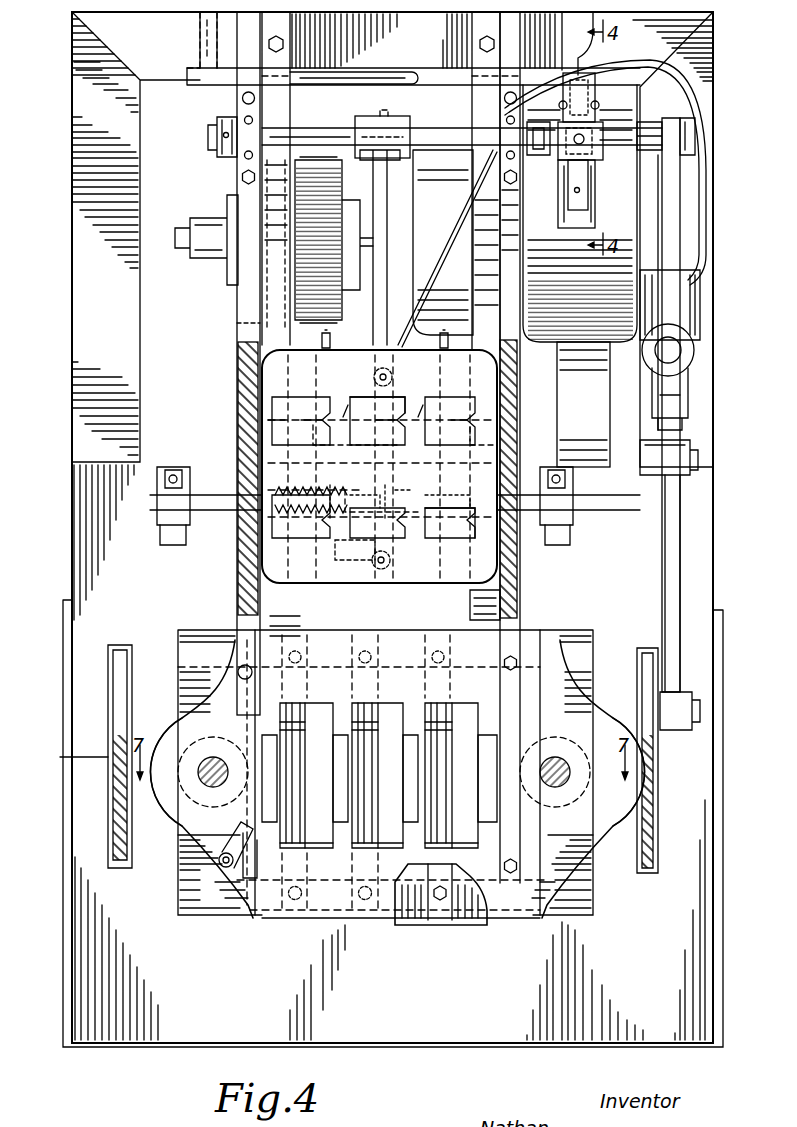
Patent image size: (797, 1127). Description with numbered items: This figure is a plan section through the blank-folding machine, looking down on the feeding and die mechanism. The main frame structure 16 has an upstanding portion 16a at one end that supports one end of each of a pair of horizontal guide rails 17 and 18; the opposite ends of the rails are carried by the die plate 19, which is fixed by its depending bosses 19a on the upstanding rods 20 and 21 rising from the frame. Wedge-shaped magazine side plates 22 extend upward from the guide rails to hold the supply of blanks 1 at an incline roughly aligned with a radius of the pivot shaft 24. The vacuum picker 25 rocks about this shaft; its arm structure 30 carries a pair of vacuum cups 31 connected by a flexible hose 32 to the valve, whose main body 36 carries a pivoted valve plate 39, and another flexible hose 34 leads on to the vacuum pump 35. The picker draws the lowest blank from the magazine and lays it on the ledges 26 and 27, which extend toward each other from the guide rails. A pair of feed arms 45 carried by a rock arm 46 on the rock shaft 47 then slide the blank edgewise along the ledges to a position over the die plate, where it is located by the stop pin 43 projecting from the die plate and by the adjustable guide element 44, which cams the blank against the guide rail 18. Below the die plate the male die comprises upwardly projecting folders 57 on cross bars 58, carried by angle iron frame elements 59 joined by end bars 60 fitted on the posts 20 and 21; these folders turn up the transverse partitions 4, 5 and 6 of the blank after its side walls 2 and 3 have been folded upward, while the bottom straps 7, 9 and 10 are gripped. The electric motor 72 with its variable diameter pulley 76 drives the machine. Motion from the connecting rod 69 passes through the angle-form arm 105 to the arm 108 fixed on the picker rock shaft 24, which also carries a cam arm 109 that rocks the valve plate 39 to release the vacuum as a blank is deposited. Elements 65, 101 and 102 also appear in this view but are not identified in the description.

The blank 1 is at (395, 598).
The side wall 2 is at (386, 386).
The side wall 3 is at (450, 546).
The transverse partition 4 is at (311, 486).
The transverse partition 5 is at (365, 484).
The transverse partition 6 is at (447, 484).
The bottom strap 7 is at (273, 445).
The bottom strap 9 is at (338, 490).
The bottom strap 10 is at (490, 452).
The main frame structure 16 is at (348, 72).
The upstanding portion 16a is at (418, 70).
The guide rail 17 is at (238, 335).
The guide rail 18 is at (545, 310).
The die plate 19 is at (560, 688).
The depending boss 19a is at (387, 779).
The upstanding rod 20 is at (208, 738).
The upstanding rod 21 is at (570, 725).
The magazine side plate 22 is at (540, 385).
The pivot shaft 24 is at (437, 120).
The vacuum picker 25 is at (335, 550).
The ledge 26 is at (280, 622).
The ledge 27 is at (485, 600).
The arm structure 30 is at (372, 190).
The vacuum cup 31 is at (372, 562).
The flexible hose 32 is at (455, 238).
The flexible hose 34 is at (706, 97).
The vacuum pump 35 is at (700, 318).
The main body part 36 is at (560, 205).
The valve plate 39 is at (568, 180).
The stop pin 43 is at (385, 895).
The adjustable guide element 44 is at (238, 828).
The feed arm 45 is at (465, 328).
The rock arm 46 is at (397, 472).
The rock shaft 47 is at (605, 512).
The folder 57 is at (445, 708).
The cross bar 58 is at (448, 765).
The angle iron frame element 59 is at (212, 915).
The end bar 60 is at (605, 868).
The insulator 65 is at (377, 778).
The connecting rod 69 is at (676, 773).
The electric motor 72 is at (585, 322).
The variable diameter pulley 76 is at (360, 305).
The link rod 101 is at (665, 585).
The link bracket 102 is at (648, 472).
The arm 105 is at (682, 218).
The arm 108 is at (650, 163).
The cam arm 109 is at (598, 118).